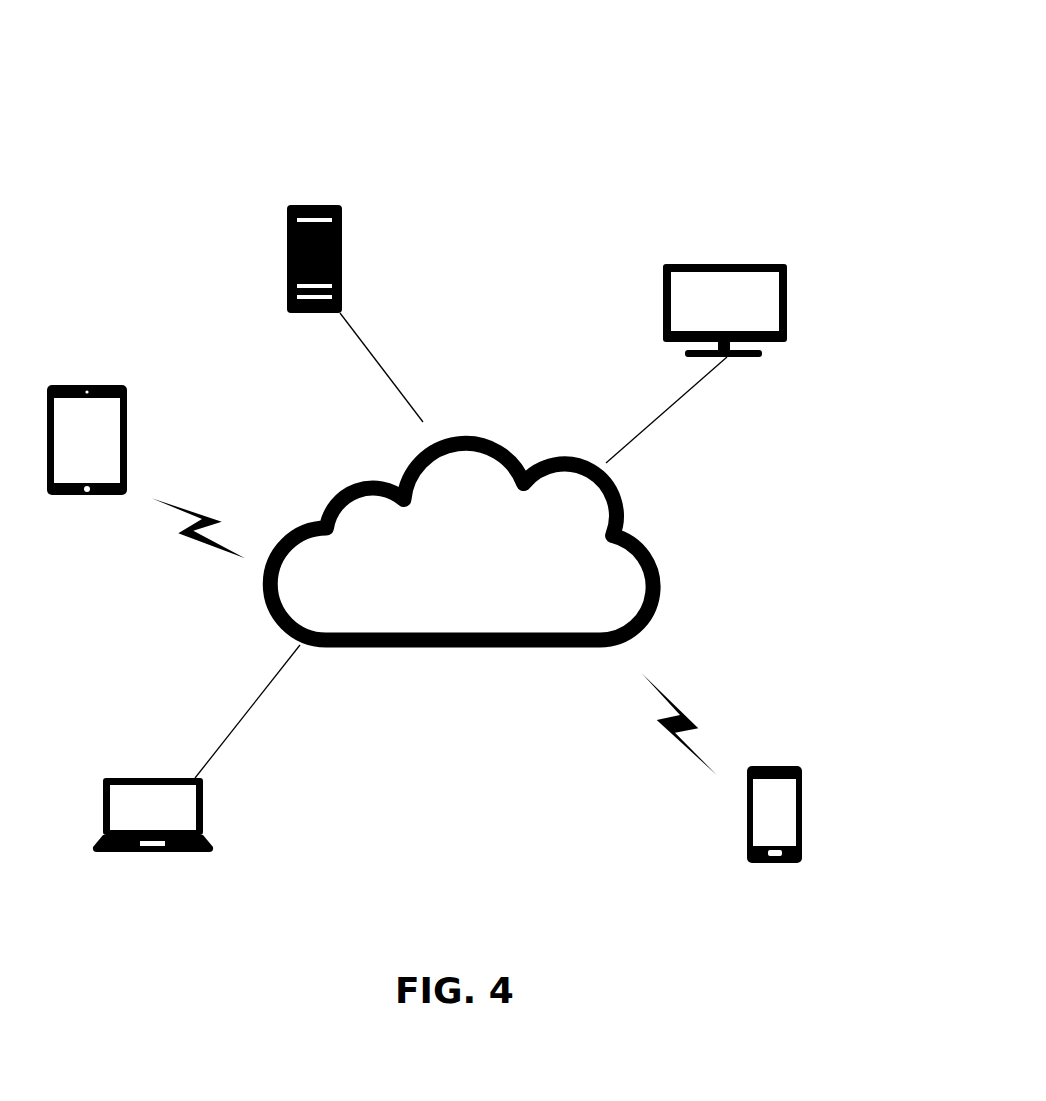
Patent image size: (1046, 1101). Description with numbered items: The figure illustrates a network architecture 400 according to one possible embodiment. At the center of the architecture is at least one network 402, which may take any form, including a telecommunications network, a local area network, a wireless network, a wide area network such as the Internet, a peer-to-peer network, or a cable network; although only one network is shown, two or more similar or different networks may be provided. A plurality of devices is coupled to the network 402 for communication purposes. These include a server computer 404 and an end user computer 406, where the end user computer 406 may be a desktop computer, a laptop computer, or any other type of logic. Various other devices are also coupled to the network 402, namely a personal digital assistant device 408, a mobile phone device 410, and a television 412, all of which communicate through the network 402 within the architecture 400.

The network architecture 400 is at (90, 82).
The network 402 is at (470, 650).
The server computer 404 is at (313, 203).
The end user computer 406 is at (150, 778).
The personal digital assistant (PDA) device 408 is at (89, 385).
The mobile phone device 410 is at (765, 766).
The television 412 is at (727, 262).